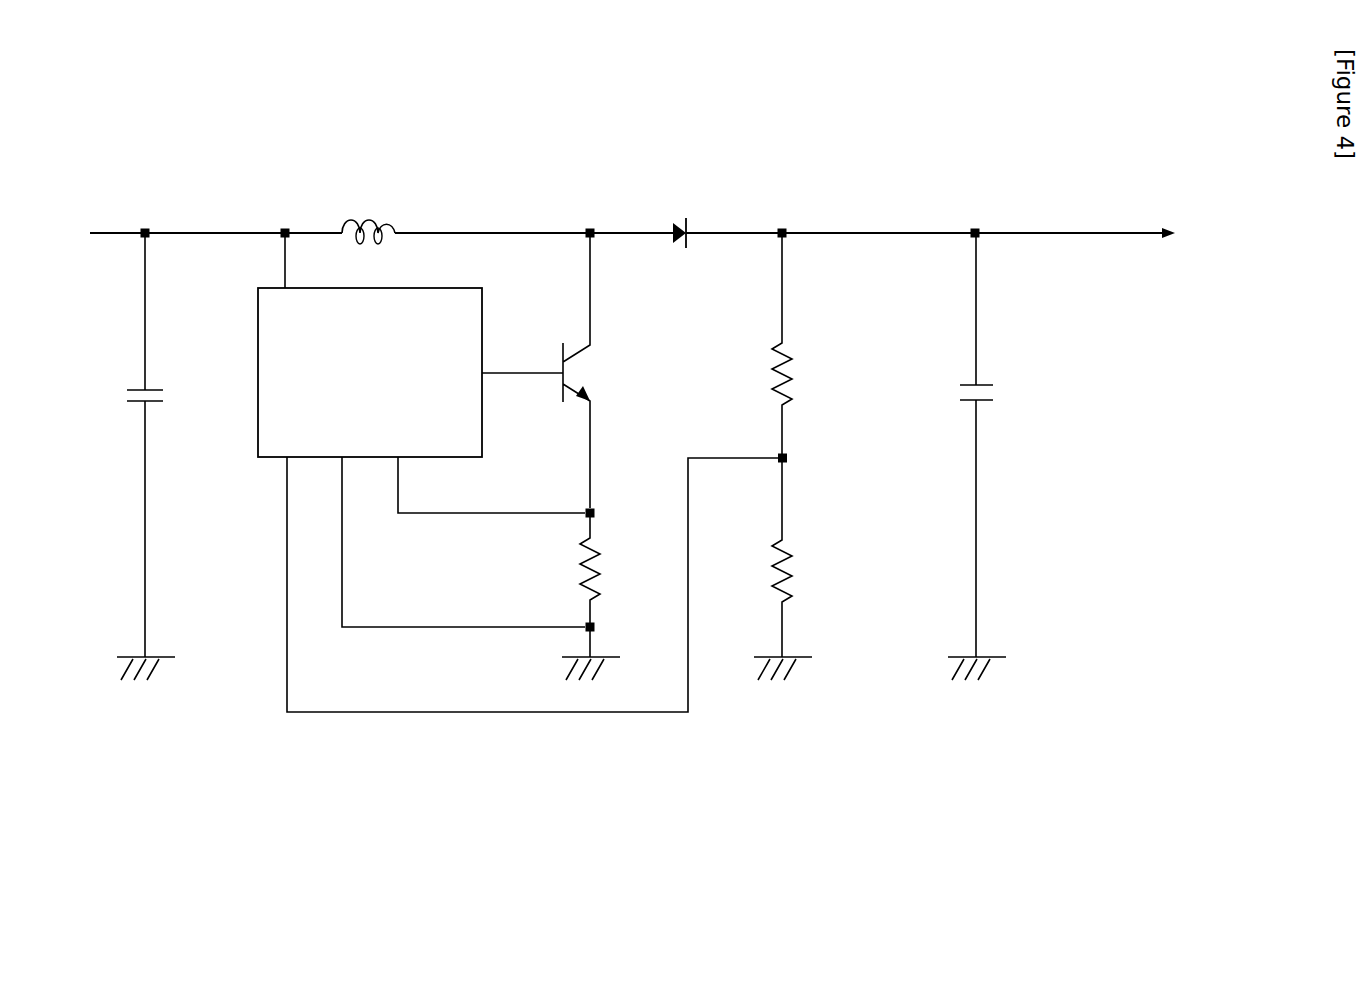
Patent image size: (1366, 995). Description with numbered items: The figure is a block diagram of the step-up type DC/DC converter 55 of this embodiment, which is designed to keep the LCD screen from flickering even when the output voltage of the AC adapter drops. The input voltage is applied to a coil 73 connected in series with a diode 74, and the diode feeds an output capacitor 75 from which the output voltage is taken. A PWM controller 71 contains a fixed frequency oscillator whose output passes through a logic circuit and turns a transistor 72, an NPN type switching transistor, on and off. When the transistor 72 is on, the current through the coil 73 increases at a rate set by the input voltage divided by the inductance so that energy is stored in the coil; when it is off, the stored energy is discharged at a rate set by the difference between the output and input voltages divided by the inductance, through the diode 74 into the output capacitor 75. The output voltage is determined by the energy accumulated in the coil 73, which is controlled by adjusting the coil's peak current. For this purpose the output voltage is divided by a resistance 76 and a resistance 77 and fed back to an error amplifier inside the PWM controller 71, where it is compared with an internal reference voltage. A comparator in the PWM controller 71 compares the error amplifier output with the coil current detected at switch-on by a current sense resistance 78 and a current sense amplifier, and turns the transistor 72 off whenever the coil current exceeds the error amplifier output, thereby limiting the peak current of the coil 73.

The DC/DC converter 55 is at (881, 170).
The PWM controller 71 is at (425, 287).
The transistor 72 is at (610, 358).
The coil 73 is at (398, 224).
The diode 74 is at (688, 222).
The output capacitor 75 is at (993, 400).
The resistance 76 is at (790, 353).
The resistance 77 is at (790, 550).
The current sense resistance 78 is at (597, 556).